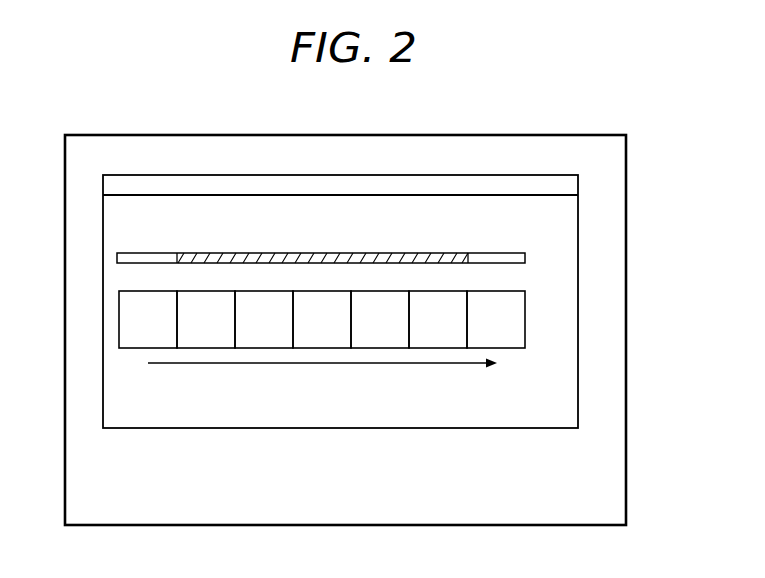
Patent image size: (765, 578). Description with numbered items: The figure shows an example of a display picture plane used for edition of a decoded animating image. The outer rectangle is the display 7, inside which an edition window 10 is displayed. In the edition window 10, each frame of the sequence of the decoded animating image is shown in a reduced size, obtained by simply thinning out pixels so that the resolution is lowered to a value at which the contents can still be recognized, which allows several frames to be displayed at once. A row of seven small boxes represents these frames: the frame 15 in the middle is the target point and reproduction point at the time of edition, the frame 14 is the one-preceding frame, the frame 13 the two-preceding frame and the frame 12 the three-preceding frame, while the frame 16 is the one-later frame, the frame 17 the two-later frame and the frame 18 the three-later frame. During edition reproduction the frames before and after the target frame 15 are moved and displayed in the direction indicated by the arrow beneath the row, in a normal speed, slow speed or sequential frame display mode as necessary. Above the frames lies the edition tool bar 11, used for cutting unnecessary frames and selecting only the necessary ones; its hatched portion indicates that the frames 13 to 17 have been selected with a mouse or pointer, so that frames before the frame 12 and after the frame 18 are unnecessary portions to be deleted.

The display 7 is at (570, 491).
The edition window 10 is at (513, 193).
The edition tool bar 11 is at (162, 253).
The three-preceding frame 12 is at (496, 319).
The two-preceding frame 13 is at (438, 319).
The one-preceding frame 14 is at (380, 319).
The target frame 15 is at (322, 319).
The one-later frame 16 is at (264, 319).
The two-later frame 17 is at (206, 319).
The three-later frame 18 is at (148, 319).